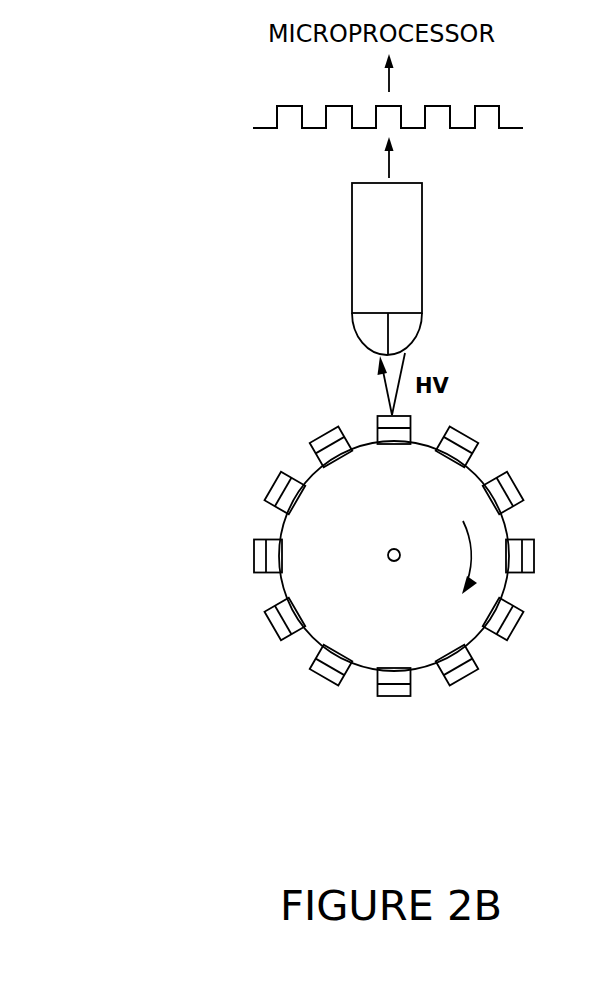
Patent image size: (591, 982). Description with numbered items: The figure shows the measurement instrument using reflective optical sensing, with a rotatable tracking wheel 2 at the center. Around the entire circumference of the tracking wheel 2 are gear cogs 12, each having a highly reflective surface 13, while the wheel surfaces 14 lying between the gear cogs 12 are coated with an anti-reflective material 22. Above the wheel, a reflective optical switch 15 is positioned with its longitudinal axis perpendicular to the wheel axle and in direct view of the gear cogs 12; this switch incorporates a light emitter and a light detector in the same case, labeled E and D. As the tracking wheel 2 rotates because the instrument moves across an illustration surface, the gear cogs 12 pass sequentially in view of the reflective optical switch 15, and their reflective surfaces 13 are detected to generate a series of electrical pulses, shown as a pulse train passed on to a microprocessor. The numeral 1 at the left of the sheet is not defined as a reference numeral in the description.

The measuring apparatus 1 is at (262, 213).
The tracking wheel 2 is at (320, 558).
The gear cogs 12 is at (527, 670).
The highly reflective surfaces 13 is at (400, 714).
The wheel surfaces 14 is at (359, 682).
The reflective optical switch 15 is at (330, 238).
The anti-reflective material 22 is at (294, 646).